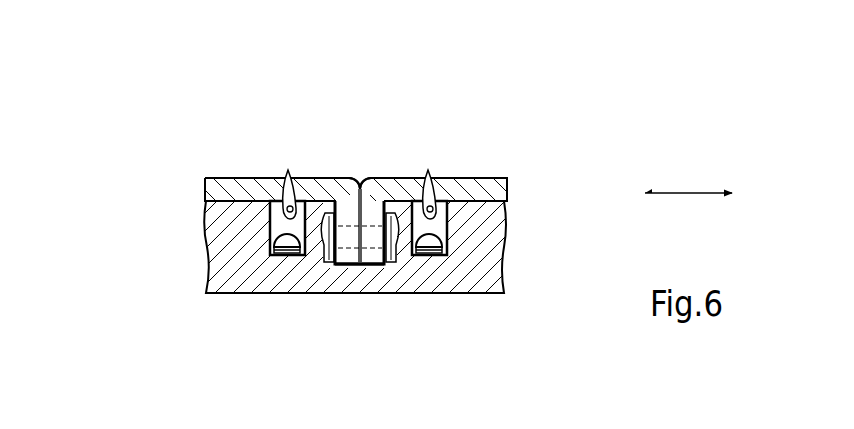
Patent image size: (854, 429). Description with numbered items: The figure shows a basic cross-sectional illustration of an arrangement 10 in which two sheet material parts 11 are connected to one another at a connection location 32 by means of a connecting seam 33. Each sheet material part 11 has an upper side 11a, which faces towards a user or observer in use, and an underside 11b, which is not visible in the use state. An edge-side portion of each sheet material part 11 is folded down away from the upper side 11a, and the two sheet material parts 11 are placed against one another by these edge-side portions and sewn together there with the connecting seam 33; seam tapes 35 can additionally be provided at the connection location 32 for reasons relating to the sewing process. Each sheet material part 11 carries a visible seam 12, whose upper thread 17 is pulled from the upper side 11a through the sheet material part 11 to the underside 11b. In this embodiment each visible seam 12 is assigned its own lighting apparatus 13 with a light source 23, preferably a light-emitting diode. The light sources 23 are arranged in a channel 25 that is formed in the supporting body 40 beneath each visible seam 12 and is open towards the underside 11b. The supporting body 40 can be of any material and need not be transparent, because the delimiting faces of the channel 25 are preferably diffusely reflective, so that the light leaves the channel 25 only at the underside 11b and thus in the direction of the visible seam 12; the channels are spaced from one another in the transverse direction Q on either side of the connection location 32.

The arrangement 10 is at (147, 126).
The sheet material part 11 is at (205, 188).
The upper side 11a is at (215, 170).
The underside 11b is at (235, 212).
The visible seam 12 is at (299, 171).
The lighting apparatus 13 is at (262, 264).
The upper thread 17 is at (286, 170).
The light source 23 is at (290, 254).
The channel 25 is at (268, 177).
The connection location 32 is at (368, 168).
The connecting seam 33 is at (326, 266).
The seam tape 35 is at (398, 254).
The supporting body 40 is at (505, 265).
The transverse direction Q is at (683, 193).